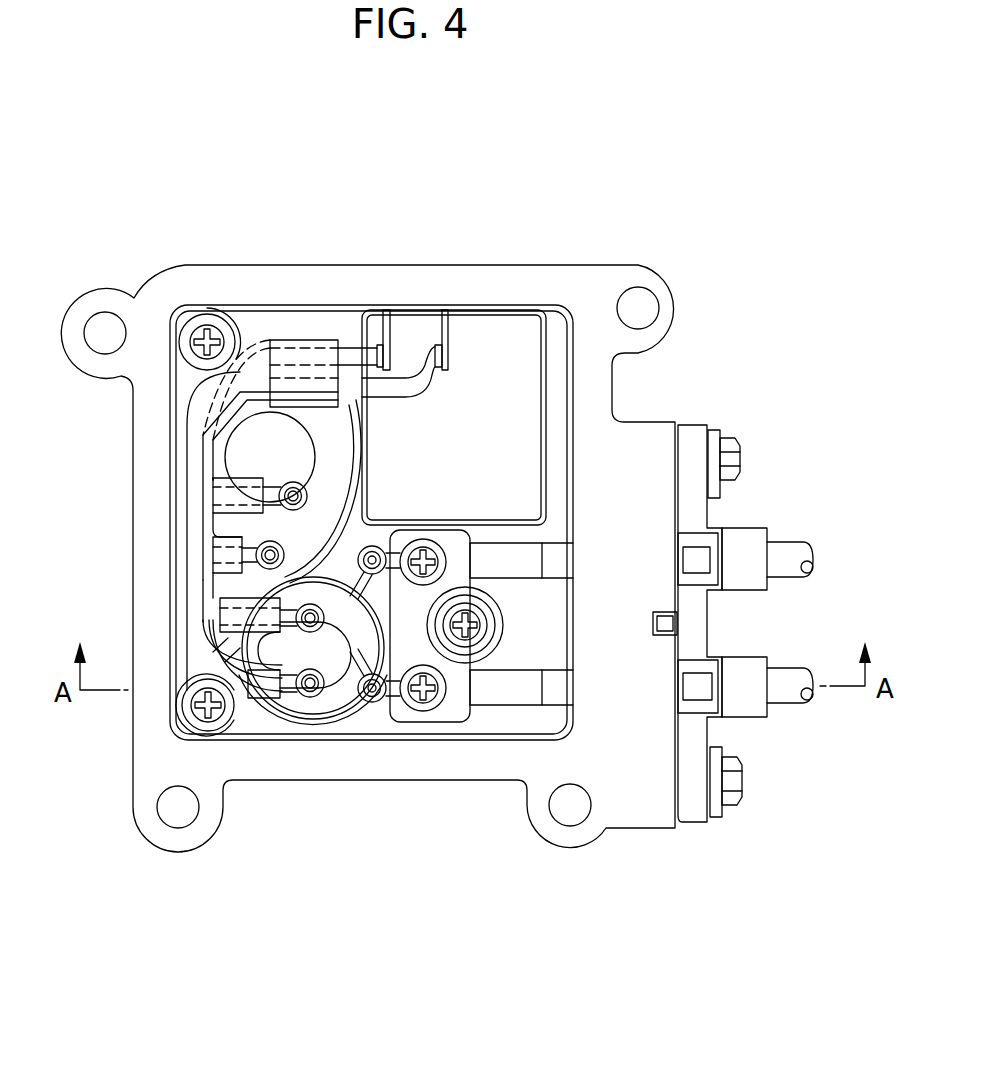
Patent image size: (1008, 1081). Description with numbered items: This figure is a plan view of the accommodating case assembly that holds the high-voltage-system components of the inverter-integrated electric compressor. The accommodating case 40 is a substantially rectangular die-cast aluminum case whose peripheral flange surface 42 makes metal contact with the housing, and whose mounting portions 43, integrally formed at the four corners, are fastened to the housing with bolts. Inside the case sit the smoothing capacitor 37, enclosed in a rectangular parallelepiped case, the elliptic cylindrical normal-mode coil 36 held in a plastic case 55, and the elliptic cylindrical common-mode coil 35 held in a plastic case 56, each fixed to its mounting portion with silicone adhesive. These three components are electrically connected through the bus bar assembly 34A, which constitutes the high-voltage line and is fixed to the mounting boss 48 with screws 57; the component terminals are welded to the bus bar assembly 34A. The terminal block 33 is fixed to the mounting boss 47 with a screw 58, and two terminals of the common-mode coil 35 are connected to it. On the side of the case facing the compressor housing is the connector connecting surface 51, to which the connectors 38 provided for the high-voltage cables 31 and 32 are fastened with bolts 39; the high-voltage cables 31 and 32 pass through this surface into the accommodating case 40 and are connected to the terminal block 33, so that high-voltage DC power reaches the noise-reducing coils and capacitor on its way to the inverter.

The accommodating case 40 is at (401, 250).
The flange surface 42 is at (487, 282).
The mounting portions 43 is at (98, 318).
The smoothing capacitor 37 is at (525, 345).
The normal-mode coil 36 is at (318, 420).
The common-mode coil 35 is at (333, 697).
The bus bar assembly 34A is at (195, 533).
The mounting boss 48 is at (185, 668).
The screws 57 is at (200, 333).
The plastic case 56 is at (280, 718).
The plastic case 55 is at (352, 520).
The terminal block 33 is at (450, 705).
The screw 58 is at (480, 608).
The mounting boss 47 is at (500, 632).
The connector connecting surface 51 is at (665, 420).
The connectors 38 is at (720, 455).
The bolts 39 is at (732, 800).
The high-voltage cable 31 is at (790, 568).
The high-voltage cable 32 is at (792, 700).